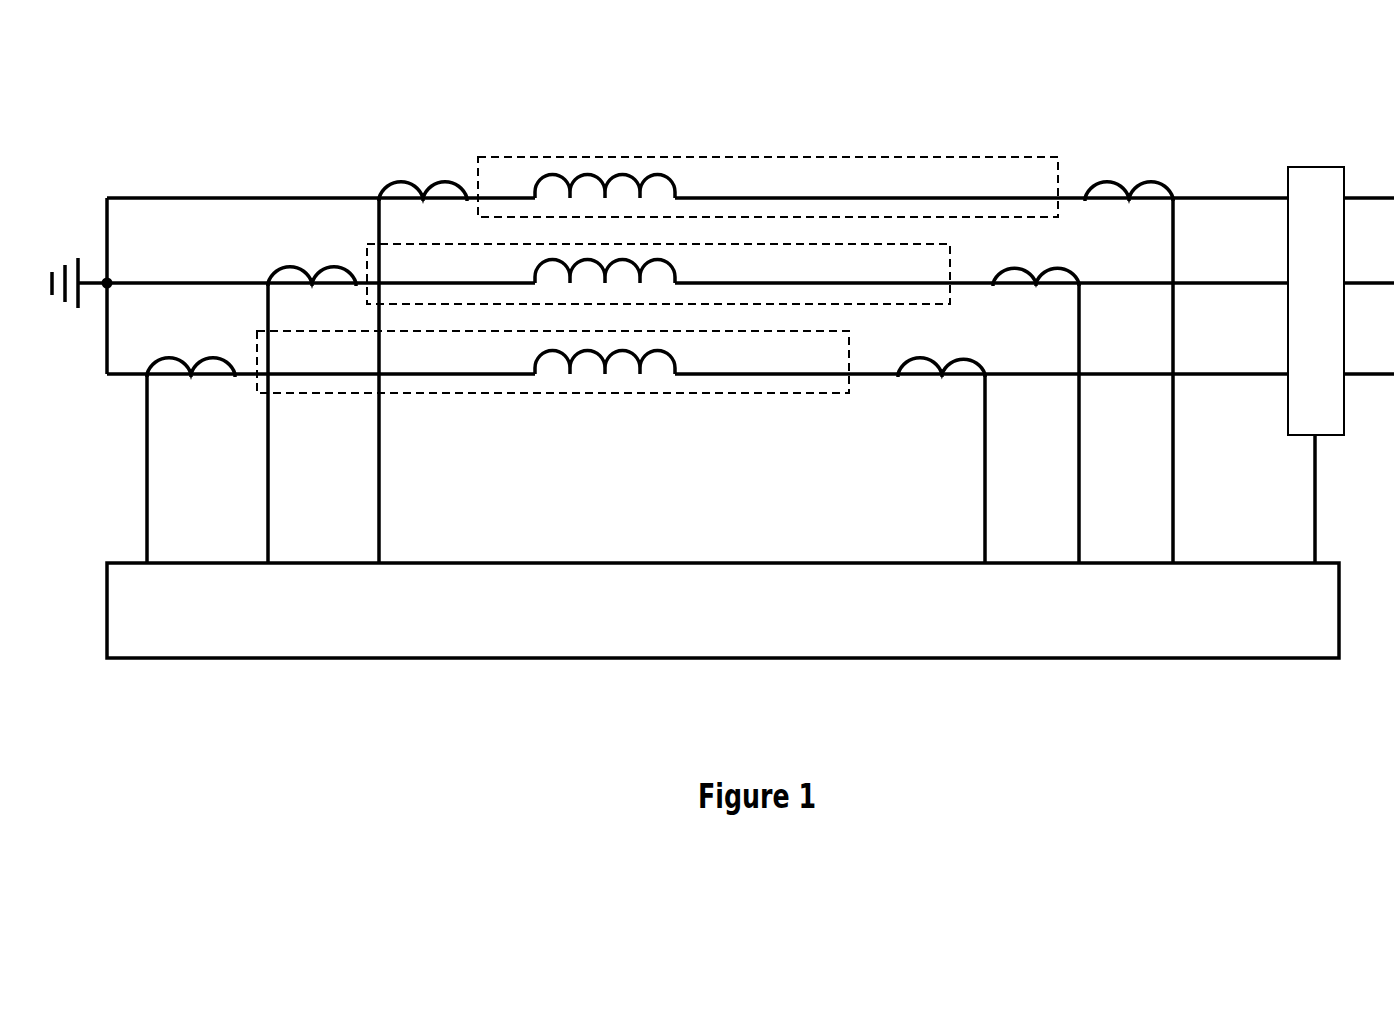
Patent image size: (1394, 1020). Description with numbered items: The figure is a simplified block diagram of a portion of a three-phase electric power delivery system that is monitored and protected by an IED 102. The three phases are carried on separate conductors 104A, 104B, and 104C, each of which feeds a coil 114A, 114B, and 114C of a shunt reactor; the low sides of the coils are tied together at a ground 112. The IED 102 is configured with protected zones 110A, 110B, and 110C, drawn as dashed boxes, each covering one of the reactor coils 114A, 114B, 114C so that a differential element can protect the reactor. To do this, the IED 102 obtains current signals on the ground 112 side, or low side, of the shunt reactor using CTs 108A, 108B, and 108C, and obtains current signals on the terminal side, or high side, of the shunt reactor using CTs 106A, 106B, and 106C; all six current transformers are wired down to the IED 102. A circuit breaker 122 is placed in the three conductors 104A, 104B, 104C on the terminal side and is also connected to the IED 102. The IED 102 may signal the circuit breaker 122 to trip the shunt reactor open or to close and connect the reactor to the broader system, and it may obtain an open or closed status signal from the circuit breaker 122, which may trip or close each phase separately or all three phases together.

The IED 102 is at (922, 660).
The conductor 104A is at (1202, 201).
The conductor 104B is at (1202, 286).
The conductor 104C is at (1195, 377).
The CT 106A is at (1131, 161).
The CT 106B is at (1093, 247).
The CT 106C is at (1002, 341).
The CT 108A is at (392, 182).
The CT 108B is at (281, 268).
The CT 108C is at (167, 357).
The protected zone 110A is at (1013, 157).
The protected zone 110B is at (910, 305).
The protected zone 110C is at (828, 394).
The ground 112 is at (67, 305).
The coil 114A is at (590, 174).
The coil 114B is at (590, 260).
The coil 114C is at (590, 351).
The circuit breaker 122 is at (1318, 166).